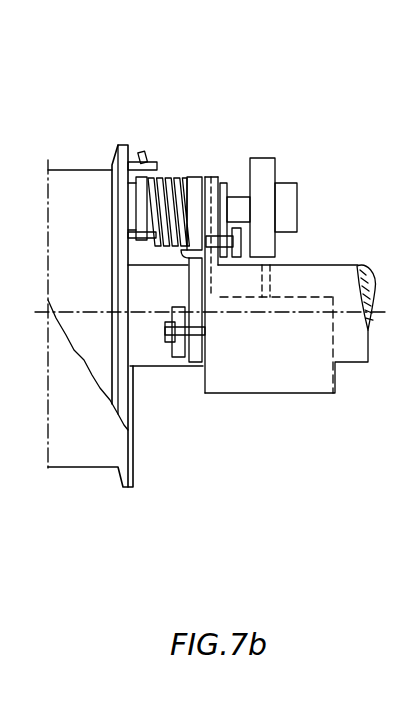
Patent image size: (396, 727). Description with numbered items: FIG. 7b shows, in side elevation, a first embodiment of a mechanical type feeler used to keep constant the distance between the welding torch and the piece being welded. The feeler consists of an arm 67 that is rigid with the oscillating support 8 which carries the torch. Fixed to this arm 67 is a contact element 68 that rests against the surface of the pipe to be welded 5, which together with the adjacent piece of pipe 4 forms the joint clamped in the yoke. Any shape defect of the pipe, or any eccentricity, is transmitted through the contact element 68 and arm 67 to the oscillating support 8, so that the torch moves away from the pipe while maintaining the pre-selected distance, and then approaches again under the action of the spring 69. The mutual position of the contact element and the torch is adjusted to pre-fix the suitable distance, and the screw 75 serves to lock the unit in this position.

The piece of pipe 4 is at (337, 285).
The piece of pipe to be welded 5 is at (147, 355).
The oscillating support 8 is at (270, 224).
The arm 67 is at (203, 318).
The contact element 68 is at (178, 348).
The spring 69 is at (165, 190).
The screw 75 is at (237, 230).